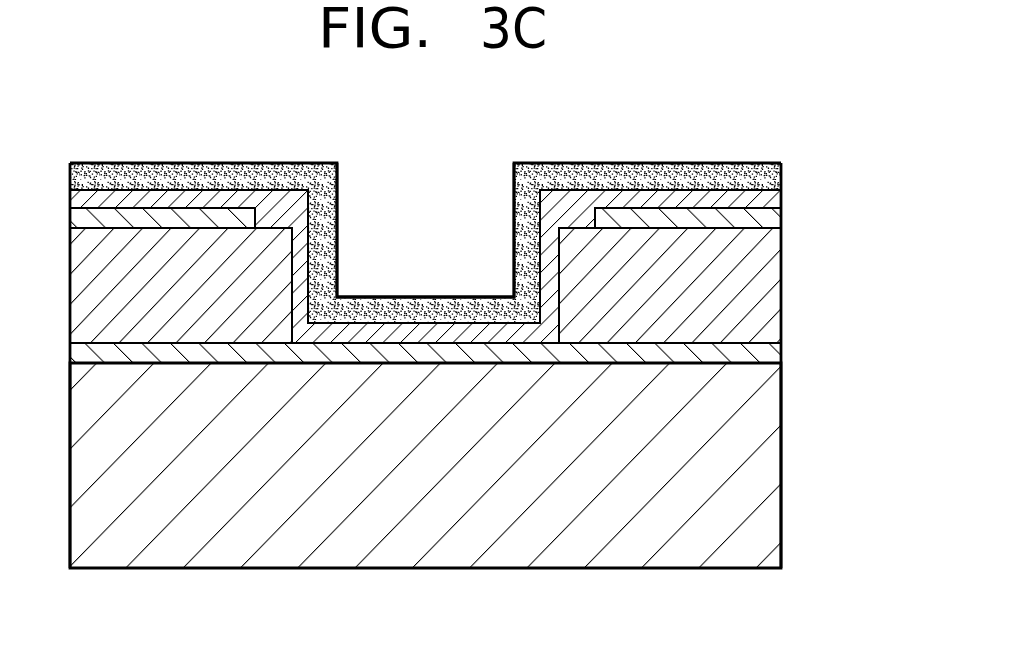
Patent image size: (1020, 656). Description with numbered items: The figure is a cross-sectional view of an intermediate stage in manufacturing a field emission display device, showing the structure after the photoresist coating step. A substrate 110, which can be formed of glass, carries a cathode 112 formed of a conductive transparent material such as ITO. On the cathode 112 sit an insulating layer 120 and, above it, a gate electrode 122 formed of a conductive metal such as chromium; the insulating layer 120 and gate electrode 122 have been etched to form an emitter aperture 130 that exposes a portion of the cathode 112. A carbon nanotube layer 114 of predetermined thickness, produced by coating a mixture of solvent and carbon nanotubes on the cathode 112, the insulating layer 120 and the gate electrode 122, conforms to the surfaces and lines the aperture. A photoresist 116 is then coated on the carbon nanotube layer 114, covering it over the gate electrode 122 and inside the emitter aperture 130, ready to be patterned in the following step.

The substrate 110 is at (777, 470).
The cathode 112 is at (777, 353).
The carbon nanotube layer 114 is at (780, 194).
The photoresist 116 is at (780, 164).
The insulating layer 120 is at (777, 285).
The gate electrode 122 is at (777, 214).
The emitter aperture 130 is at (445, 239).